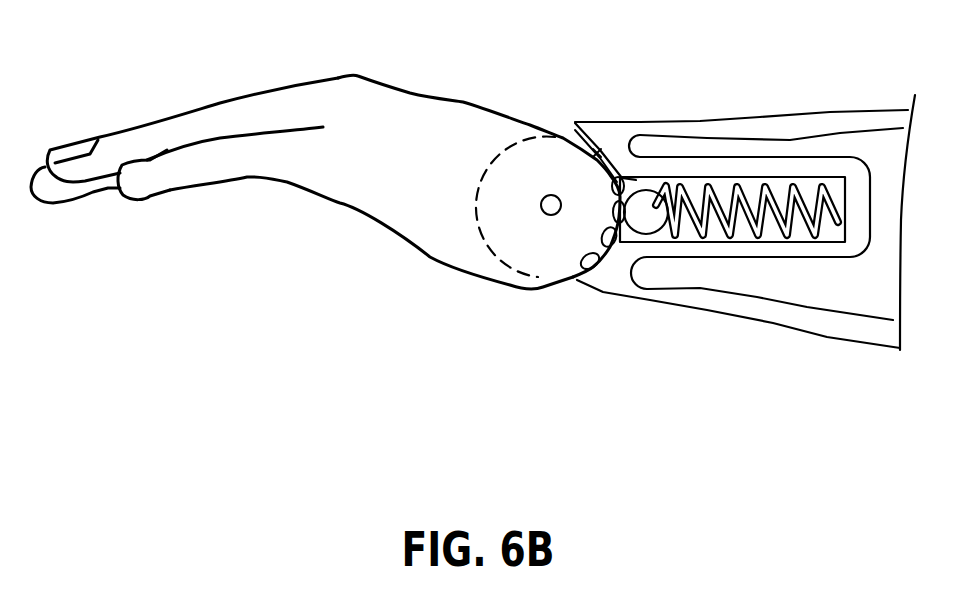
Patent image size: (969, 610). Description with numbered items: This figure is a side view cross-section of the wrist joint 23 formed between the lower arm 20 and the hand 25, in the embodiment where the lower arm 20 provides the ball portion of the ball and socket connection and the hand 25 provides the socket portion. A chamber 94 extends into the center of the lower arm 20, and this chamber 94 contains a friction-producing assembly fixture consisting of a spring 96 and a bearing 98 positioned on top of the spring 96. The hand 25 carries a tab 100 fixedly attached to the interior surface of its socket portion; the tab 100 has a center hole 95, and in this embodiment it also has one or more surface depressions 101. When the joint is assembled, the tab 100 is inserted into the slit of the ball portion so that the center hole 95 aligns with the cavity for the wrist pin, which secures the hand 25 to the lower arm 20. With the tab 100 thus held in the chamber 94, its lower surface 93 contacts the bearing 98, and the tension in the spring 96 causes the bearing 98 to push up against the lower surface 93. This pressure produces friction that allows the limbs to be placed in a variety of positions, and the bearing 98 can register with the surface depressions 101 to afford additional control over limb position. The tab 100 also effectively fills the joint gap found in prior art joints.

The lower arm 20 is at (875, 158).
The wrist joint 23 is at (656, 87).
The hand 25 is at (380, 188).
The lower surface 93 is at (657, 175).
The chamber 94 is at (683, 243).
The center hole 95 is at (543, 214).
The spring 96 is at (783, 222).
The bearing 98 is at (640, 212).
The tab 100 is at (560, 243).
The surface depressions 101 is at (620, 174).